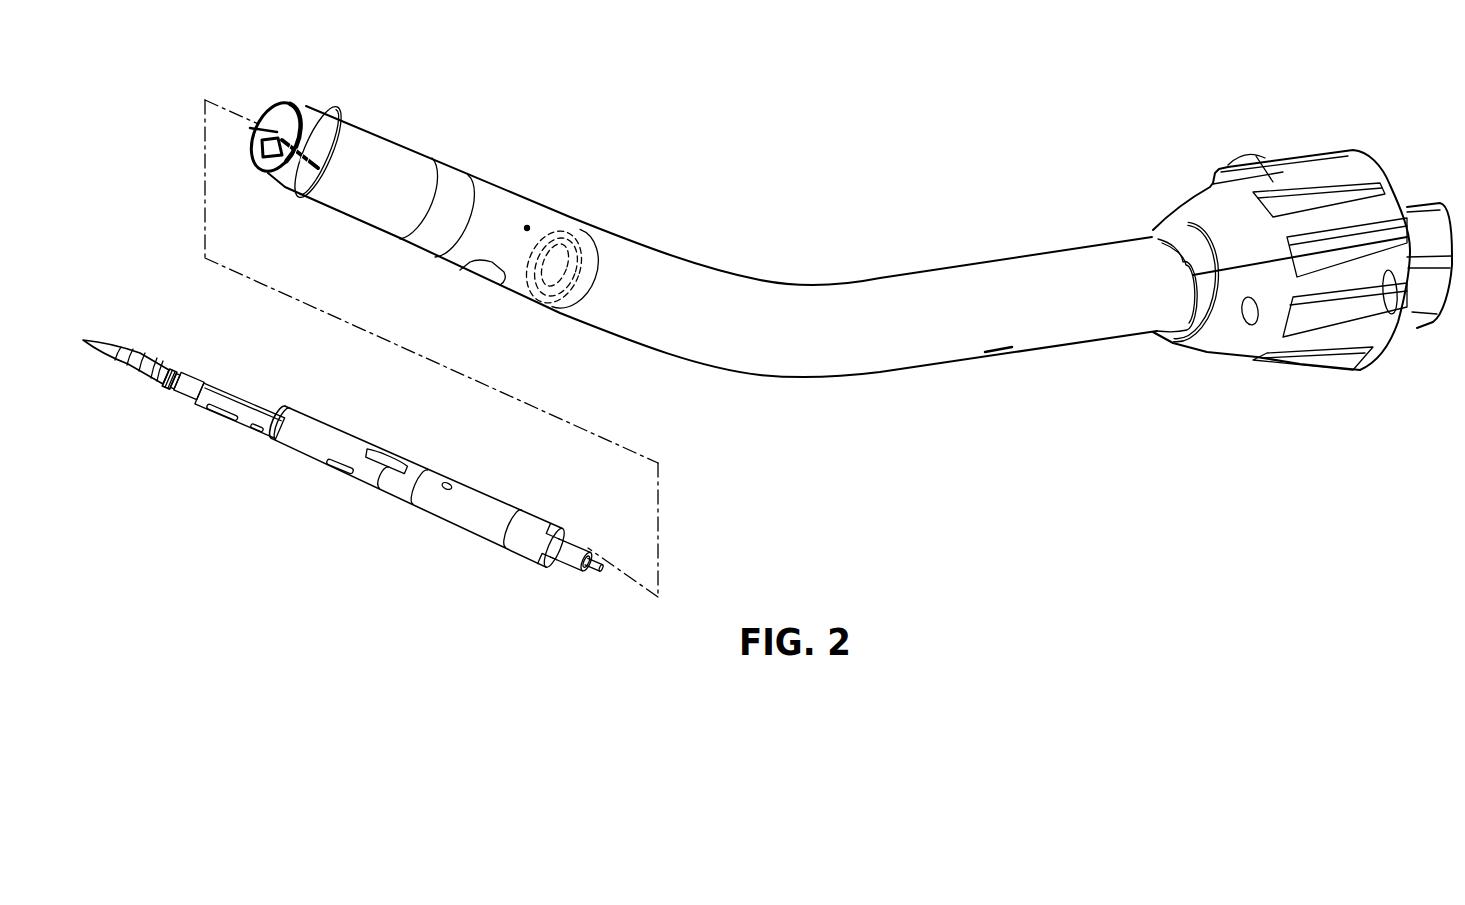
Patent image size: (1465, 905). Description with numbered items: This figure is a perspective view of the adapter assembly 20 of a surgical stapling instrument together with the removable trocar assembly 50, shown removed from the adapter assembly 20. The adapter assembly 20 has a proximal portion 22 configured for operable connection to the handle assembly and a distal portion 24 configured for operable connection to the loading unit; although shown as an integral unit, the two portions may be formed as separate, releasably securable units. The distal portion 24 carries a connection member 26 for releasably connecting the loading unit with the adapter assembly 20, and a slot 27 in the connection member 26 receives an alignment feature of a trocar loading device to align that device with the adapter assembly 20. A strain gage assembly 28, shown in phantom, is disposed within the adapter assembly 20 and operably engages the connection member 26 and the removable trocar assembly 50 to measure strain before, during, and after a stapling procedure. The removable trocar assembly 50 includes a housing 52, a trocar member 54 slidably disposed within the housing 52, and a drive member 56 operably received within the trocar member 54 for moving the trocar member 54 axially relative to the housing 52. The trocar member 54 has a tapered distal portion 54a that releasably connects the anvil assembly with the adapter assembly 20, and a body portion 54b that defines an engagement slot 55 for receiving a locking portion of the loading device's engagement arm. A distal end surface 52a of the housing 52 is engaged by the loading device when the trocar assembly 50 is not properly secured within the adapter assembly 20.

The adapter assembly 20 is at (822, 147).
The proximal portion 22 is at (1130, 391).
The distal portion 24 is at (525, 186).
The connection member 26 is at (305, 98).
The slot 27 is at (307, 157).
The strain gage assembly 28 is at (584, 240).
The removable trocar assembly 50 is at (395, 539).
The housing 52 is at (465, 482).
The distal end surface 52a is at (268, 433).
The trocar member 54 is at (155, 396).
The tapered distal portion 54a is at (146, 363).
The body portion 54b is at (252, 404).
The engagement slot 55 is at (221, 416).
The drive member 56 is at (546, 571).